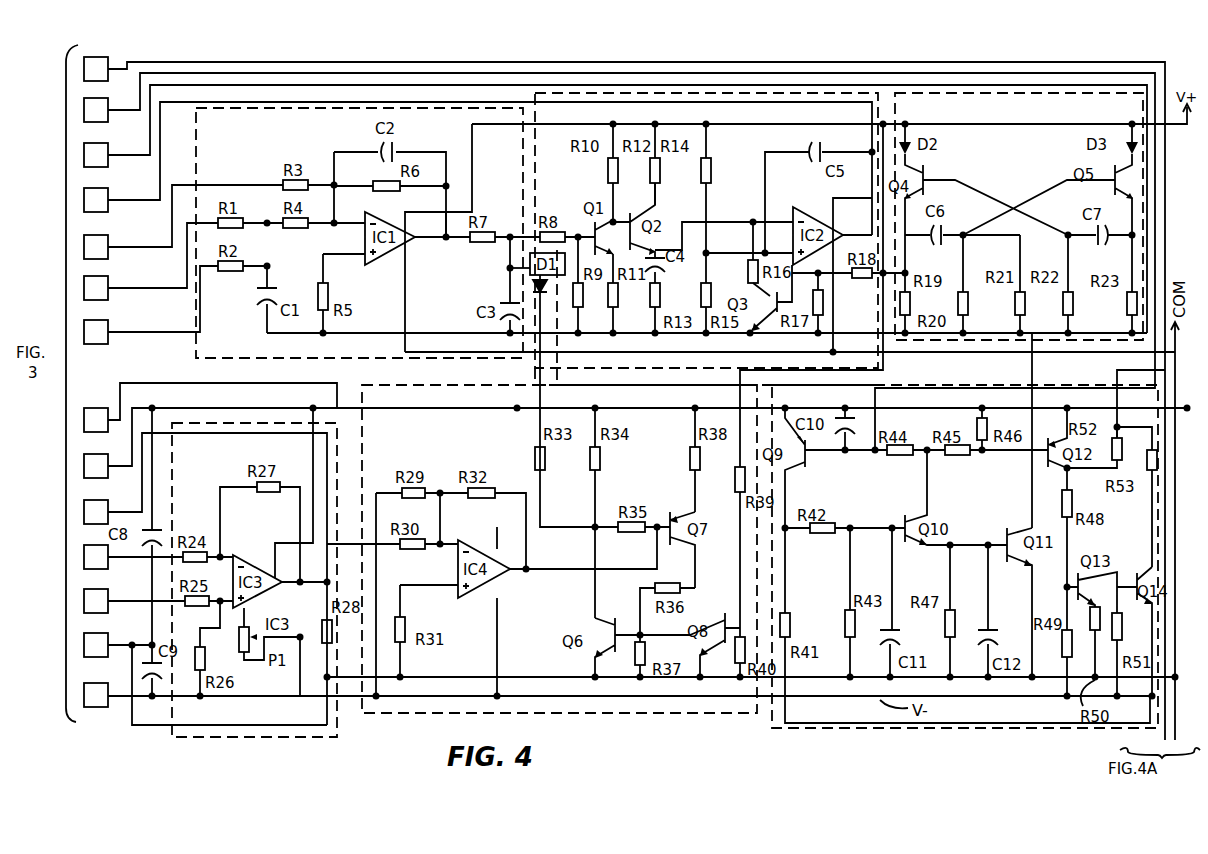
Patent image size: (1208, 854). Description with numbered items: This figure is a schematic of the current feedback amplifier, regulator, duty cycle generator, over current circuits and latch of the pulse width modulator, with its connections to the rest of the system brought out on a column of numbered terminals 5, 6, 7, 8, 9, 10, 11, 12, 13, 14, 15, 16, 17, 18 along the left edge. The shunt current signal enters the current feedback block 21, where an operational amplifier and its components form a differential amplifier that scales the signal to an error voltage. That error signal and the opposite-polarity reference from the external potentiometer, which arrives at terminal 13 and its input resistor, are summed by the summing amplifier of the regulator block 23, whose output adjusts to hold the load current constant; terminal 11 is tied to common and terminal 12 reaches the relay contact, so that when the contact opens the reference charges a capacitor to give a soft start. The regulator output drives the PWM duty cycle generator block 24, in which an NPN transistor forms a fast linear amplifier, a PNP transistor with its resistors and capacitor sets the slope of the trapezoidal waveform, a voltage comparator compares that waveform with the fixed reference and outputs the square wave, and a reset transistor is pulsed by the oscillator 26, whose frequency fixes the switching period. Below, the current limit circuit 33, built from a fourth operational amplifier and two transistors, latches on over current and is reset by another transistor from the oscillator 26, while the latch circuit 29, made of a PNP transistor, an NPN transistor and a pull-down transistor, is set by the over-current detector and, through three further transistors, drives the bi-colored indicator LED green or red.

The terminal 5 is at (618, 695).
The terminal 6 is at (205, 679).
The terminal 7 is at (134, 601).
The terminal 8 is at (133, 557).
The terminal 9 is at (205, 579).
The terminal 10 is at (635, 443).
The terminal 11 is at (210, 407).
The terminal 12 is at (151, 305).
The terminal 13 is at (151, 261).
The terminal 14 is at (183, 222).
The terminal 15 is at (478, 168).
The terminal 16 is at (615, 209).
The terminal 17 is at (619, 261).
The terminal 18 is at (624, 398).
The current feedback block 21 is at (272, 737).
The regulator block 23 is at (196, 158).
The PWM duty cycle generator block 24 is at (548, 93).
The oscillator 26 is at (927, 93).
The latch circuit 29 is at (893, 728).
The current limit circuit 33 is at (662, 713).